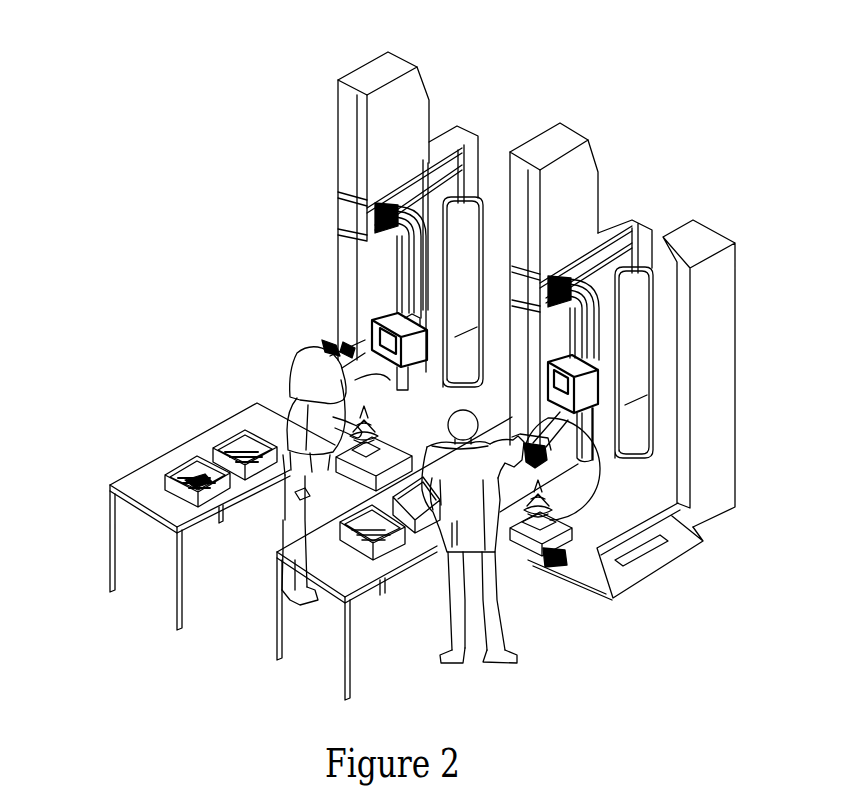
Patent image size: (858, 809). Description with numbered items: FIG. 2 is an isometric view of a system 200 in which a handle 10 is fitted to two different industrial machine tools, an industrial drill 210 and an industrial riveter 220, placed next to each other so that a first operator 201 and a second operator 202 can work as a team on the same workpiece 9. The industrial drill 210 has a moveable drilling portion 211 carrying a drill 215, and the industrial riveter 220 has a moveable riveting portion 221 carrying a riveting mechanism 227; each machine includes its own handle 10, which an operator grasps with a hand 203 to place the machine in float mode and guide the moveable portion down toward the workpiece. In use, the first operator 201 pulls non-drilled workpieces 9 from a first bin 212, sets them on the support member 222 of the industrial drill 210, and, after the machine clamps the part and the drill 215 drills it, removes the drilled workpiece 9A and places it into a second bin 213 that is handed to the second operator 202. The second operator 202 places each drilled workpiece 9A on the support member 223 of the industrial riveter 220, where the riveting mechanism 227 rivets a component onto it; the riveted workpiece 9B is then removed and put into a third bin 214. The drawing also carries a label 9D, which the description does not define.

The system 200 is at (97, 70).
The industrial drill 210 is at (356, 58).
The industrial riveter 220 is at (544, 122).
The moveable drilling portion 211 is at (345, 330).
The handle 10 is at (340, 350).
The drill 215 is at (320, 346).
The first operator 201 is at (278, 398).
The second operator 202 is at (520, 660).
The hand 203 is at (396, 412).
The workpiece 9A is at (232, 420).
The workpiece 9B is at (660, 575).
The component 9D is at (292, 501).
The workpiece 9 is at (170, 480).
The first bin 212 is at (167, 478).
The second bin 213 is at (200, 435).
The third bin 214 is at (445, 552).
The moveable riveting portion 221 is at (598, 400).
The support member 222 is at (372, 524).
The support member 223 is at (612, 596).
The riveting mechanism 227 is at (583, 508).